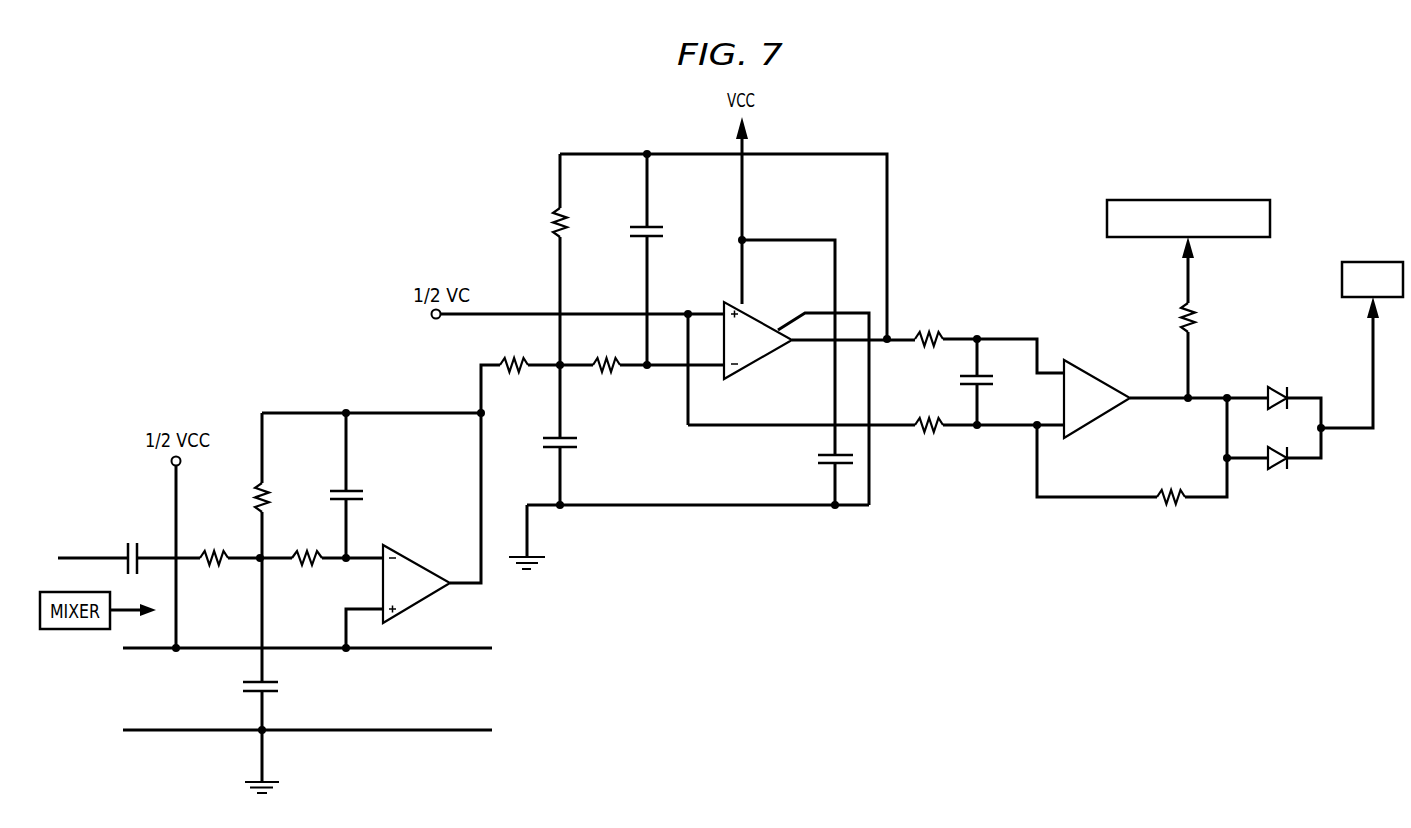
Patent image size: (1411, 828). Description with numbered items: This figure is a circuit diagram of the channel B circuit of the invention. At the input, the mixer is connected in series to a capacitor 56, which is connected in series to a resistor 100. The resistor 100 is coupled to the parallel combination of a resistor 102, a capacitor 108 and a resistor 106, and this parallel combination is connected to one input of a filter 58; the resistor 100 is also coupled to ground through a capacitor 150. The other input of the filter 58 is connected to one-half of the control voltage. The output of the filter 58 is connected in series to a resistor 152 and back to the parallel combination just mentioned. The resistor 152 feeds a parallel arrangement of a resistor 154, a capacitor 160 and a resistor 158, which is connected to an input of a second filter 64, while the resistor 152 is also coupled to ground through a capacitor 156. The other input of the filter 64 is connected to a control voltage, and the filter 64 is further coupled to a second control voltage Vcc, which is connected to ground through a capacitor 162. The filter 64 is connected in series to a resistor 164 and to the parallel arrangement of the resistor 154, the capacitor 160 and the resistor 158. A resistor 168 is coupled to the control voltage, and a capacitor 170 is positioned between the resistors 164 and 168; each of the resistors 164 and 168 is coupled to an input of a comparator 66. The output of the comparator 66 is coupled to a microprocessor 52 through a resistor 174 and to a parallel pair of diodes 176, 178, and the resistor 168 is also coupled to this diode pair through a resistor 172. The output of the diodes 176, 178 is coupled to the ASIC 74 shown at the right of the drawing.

The microprocessor 52 is at (1208, 200).
The capacitor 56 is at (128, 545).
The filter 58 is at (433, 592).
The filter 64 is at (753, 363).
The comparator 66 is at (1090, 425).
The ASIC 74 is at (1376, 262).
The resistor 100 is at (215, 565).
The resistor 102 is at (265, 487).
The resistor 106 is at (312, 565).
The capacitor 108 is at (355, 490).
The capacitor 150 is at (250, 690).
The resistor 152 is at (512, 372).
The resistor 154 is at (556, 226).
The capacitor 156 is at (570, 450).
The resistor 158 is at (607, 372).
The capacitor 160 is at (656, 228).
The capacitor 162 is at (826, 465).
The resistor 164 is at (930, 347).
The resistor 168 is at (928, 432).
The capacitor 170 is at (985, 385).
The resistor 172 is at (1152, 500).
The resistor 174 is at (1192, 305).
The diode 176 is at (1289, 392).
The diode 178 is at (1289, 465).